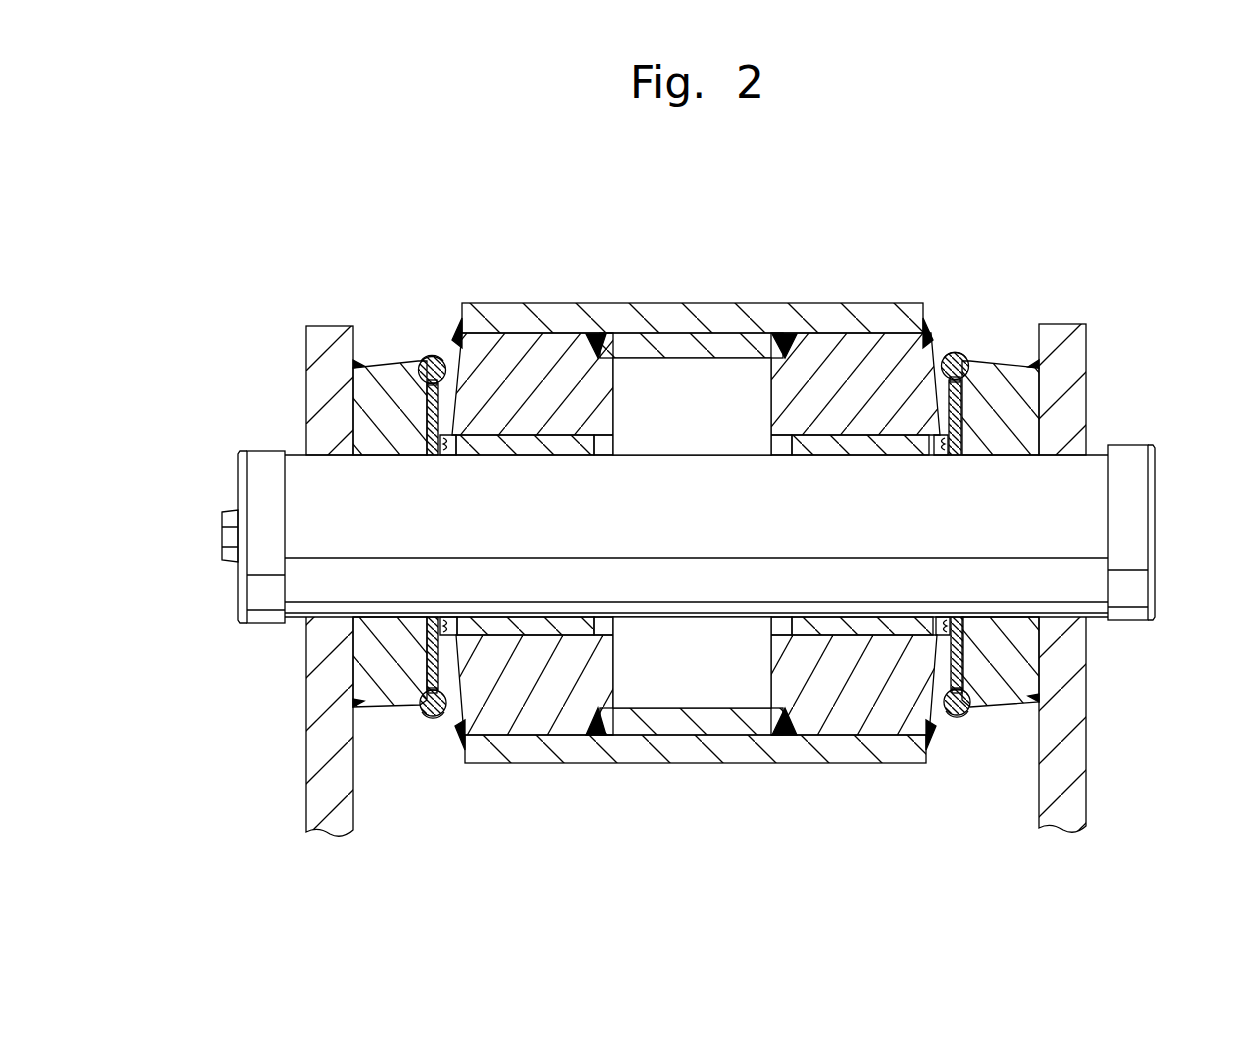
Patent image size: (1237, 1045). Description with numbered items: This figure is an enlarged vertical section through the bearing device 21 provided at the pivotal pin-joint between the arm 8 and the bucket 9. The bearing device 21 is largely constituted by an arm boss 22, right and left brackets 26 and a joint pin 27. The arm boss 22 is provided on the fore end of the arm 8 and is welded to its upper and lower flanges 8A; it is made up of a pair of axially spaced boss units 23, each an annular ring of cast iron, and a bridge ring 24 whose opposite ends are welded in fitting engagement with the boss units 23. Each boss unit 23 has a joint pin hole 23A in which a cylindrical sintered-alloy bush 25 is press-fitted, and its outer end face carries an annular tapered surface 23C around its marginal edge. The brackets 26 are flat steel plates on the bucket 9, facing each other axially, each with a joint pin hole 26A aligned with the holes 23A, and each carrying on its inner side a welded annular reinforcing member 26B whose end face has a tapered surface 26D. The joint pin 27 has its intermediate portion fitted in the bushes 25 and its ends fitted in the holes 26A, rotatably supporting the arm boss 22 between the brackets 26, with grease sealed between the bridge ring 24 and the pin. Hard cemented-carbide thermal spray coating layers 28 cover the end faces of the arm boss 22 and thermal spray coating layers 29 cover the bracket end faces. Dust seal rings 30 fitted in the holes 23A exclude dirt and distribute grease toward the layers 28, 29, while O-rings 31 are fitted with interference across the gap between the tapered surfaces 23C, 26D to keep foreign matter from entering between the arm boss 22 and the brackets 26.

The bearing device 21 is at (826, 253).
The arm 8 is at (643, 300).
The upper and lower flanges 8A is at (767, 318).
The arm boss 22 is at (697, 326).
The bridge ring 24 is at (760, 718).
The boss units 23 is at (557, 357).
The joint pin hole 23A is at (567, 635).
The annular tapered surface 23C is at (431, 356).
The bushes 25 is at (523, 628).
The bucket 9 is at (317, 322).
The brackets 26 is at (312, 388).
The joint pin hole 26A is at (337, 456).
The annular reinforcing member 26B is at (355, 665).
The annular tapered surface 26D is at (418, 363).
The joint pin 27 is at (662, 572).
The thermal spray coating layers 28 is at (955, 390).
The thermal spray coating layers 29 is at (976, 362).
The dust seal rings 30 is at (452, 428).
The O-rings 31 is at (966, 360).